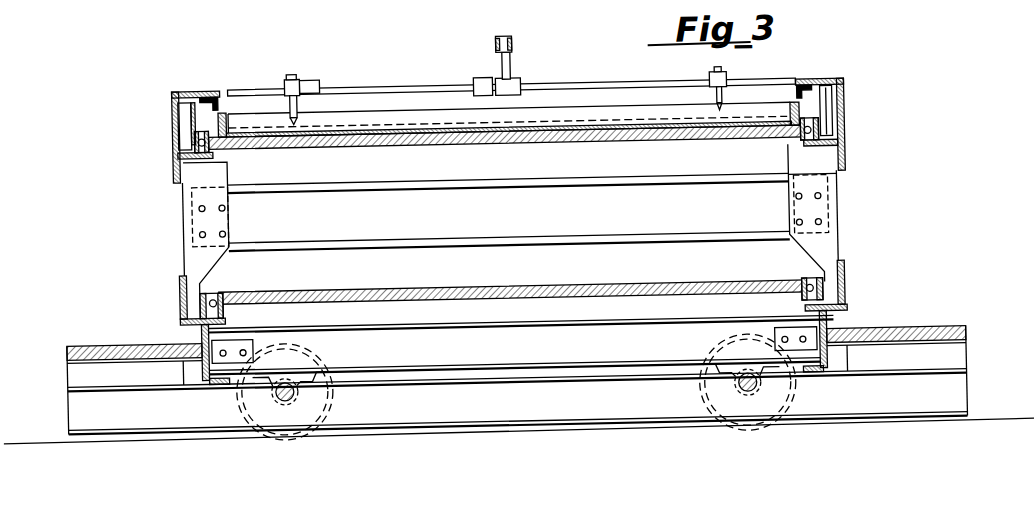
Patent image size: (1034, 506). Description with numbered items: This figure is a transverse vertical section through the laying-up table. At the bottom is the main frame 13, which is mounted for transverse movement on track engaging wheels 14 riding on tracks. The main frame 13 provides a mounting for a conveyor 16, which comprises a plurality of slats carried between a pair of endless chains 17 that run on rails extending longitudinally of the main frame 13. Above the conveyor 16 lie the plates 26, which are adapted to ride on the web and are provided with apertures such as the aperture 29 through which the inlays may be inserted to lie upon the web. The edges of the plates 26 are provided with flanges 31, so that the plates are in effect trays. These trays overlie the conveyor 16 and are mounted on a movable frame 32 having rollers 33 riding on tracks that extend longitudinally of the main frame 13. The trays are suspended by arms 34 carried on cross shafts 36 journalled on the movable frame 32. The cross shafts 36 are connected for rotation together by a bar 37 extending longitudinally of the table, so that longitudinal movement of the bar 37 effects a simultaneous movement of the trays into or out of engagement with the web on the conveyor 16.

The main frame 13 is at (131, 412).
The track engaging wheels 14 is at (333, 402).
The conveyor 16 is at (393, 144).
The endless chains 17 is at (214, 136).
The plates 26 is at (281, 124).
The aperture 29 is at (356, 124).
The flanges 31 is at (229, 107).
The movable frame 32 is at (214, 104).
The rollers 33 is at (187, 129).
The arms 34 is at (288, 82).
The cross shafts 36 is at (431, 84).
The bar 37 is at (516, 43).